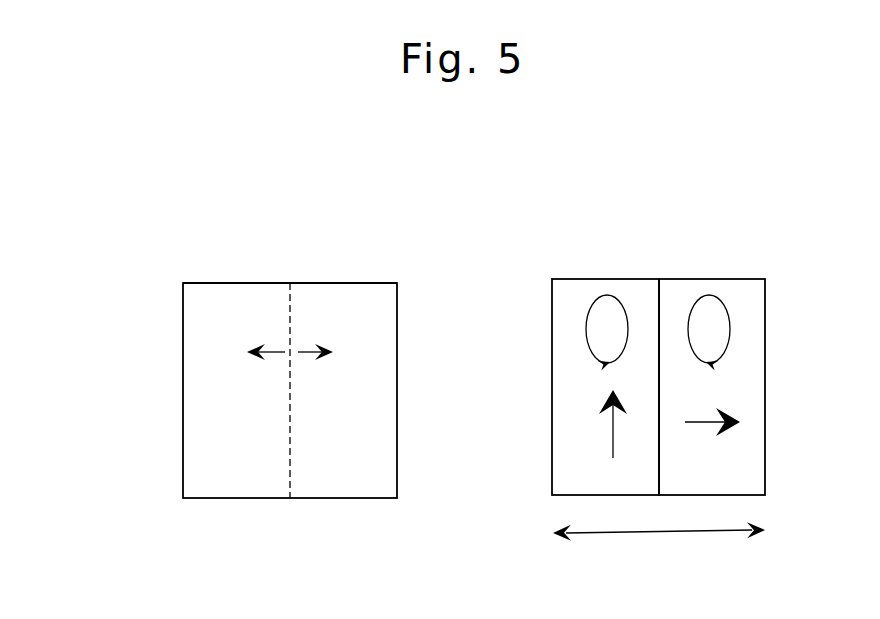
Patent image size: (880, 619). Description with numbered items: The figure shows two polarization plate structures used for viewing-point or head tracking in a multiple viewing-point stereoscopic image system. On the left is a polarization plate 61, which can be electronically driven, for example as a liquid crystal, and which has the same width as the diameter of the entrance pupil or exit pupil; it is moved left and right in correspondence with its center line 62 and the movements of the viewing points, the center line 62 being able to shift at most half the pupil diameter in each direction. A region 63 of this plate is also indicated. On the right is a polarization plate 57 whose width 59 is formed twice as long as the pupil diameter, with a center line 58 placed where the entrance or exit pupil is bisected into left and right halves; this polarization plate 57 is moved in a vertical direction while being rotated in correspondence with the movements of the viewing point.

The polarization plate 61 is at (200, 282).
The center line 62 is at (290, 318).
The first region 63 is at (237, 283).
The polarization plate 57 is at (602, 279).
The center line 58 is at (659, 304).
The width 59 is at (630, 533).